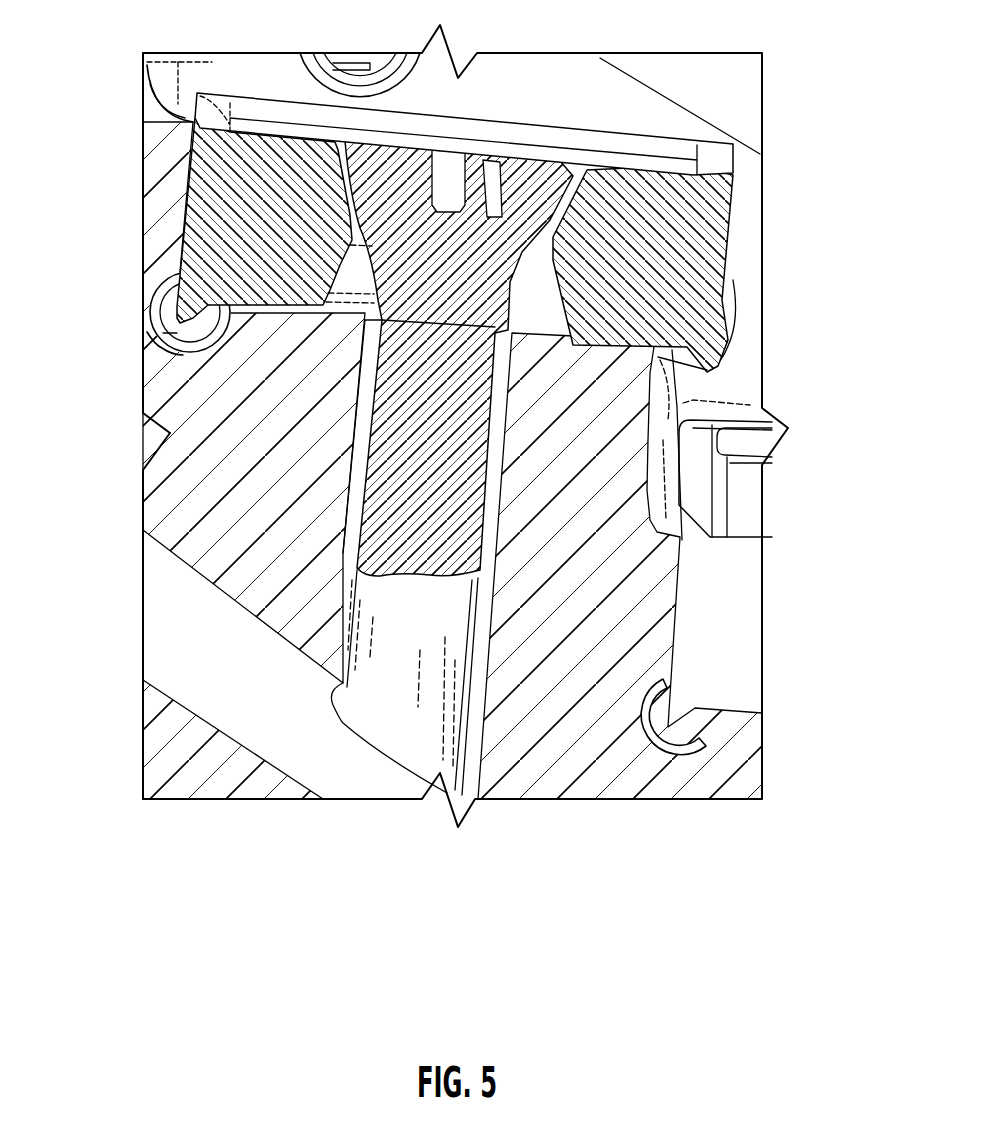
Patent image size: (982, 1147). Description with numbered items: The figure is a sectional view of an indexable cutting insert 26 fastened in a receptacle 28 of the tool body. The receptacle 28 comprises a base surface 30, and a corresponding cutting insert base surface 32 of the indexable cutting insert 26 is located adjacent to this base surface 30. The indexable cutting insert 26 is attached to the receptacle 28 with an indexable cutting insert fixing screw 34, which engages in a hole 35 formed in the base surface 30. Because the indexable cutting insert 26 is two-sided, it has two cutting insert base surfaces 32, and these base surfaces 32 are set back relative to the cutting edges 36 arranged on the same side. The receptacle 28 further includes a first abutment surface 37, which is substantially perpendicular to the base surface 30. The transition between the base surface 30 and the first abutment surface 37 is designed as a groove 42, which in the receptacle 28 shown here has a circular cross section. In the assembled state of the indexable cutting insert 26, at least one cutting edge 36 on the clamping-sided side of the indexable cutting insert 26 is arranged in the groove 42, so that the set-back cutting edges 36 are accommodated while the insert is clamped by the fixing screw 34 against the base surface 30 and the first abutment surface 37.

The indexable cutting insert 26 is at (665, 290).
The receptacle 28 is at (278, 322).
The base surface 30 is at (540, 340).
The cutting insert base surface 32 is at (648, 168).
The indexable cutting insert fixing screw 34 is at (453, 270).
The hole 35 is at (357, 502).
The cutting edge 36 is at (150, 78).
The first abutment surface 37 is at (178, 222).
The groove 42 is at (183, 333).